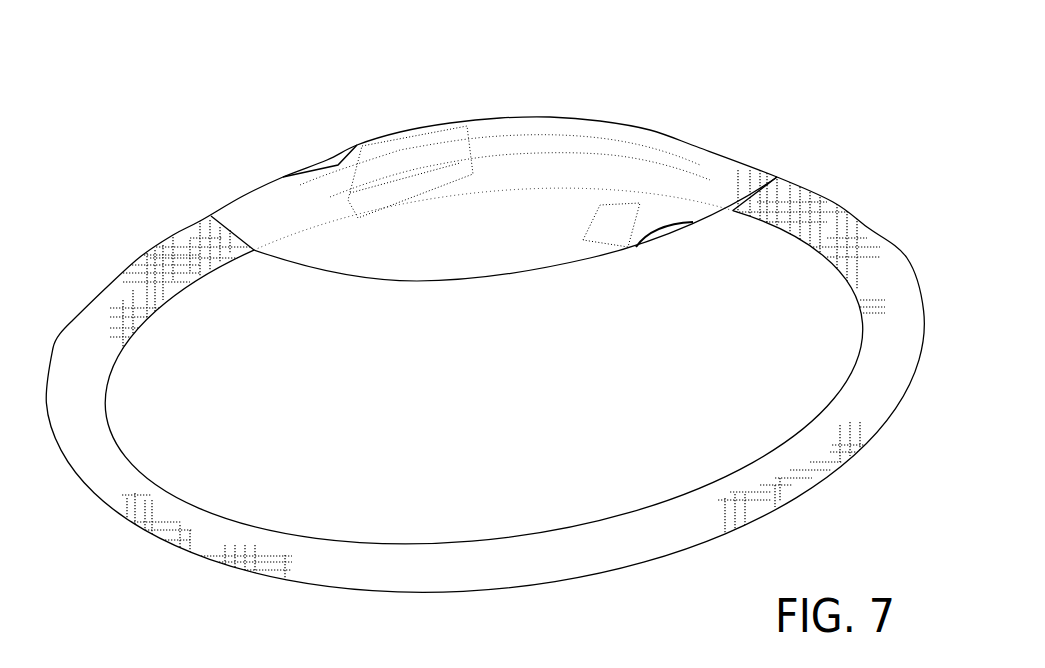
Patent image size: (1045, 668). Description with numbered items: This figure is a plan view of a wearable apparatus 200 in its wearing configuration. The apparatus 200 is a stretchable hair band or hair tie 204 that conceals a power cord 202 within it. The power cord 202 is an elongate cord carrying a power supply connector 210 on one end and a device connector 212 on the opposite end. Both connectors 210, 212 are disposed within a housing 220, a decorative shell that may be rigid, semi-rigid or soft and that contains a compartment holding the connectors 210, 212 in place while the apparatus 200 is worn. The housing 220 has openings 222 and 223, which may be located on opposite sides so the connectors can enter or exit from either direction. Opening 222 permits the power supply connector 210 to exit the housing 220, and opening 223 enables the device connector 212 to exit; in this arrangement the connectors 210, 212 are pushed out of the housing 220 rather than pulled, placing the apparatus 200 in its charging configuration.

The wearable apparatus 200 is at (864, 103).
The power cord 202 is at (70, 348).
The hair tie 204 is at (70, 348).
The power supply connector 210 is at (389, 178).
The device connector 212 is at (626, 213).
The housing 220 is at (452, 122).
The opening 222 is at (334, 158).
The opening 223 is at (656, 236).